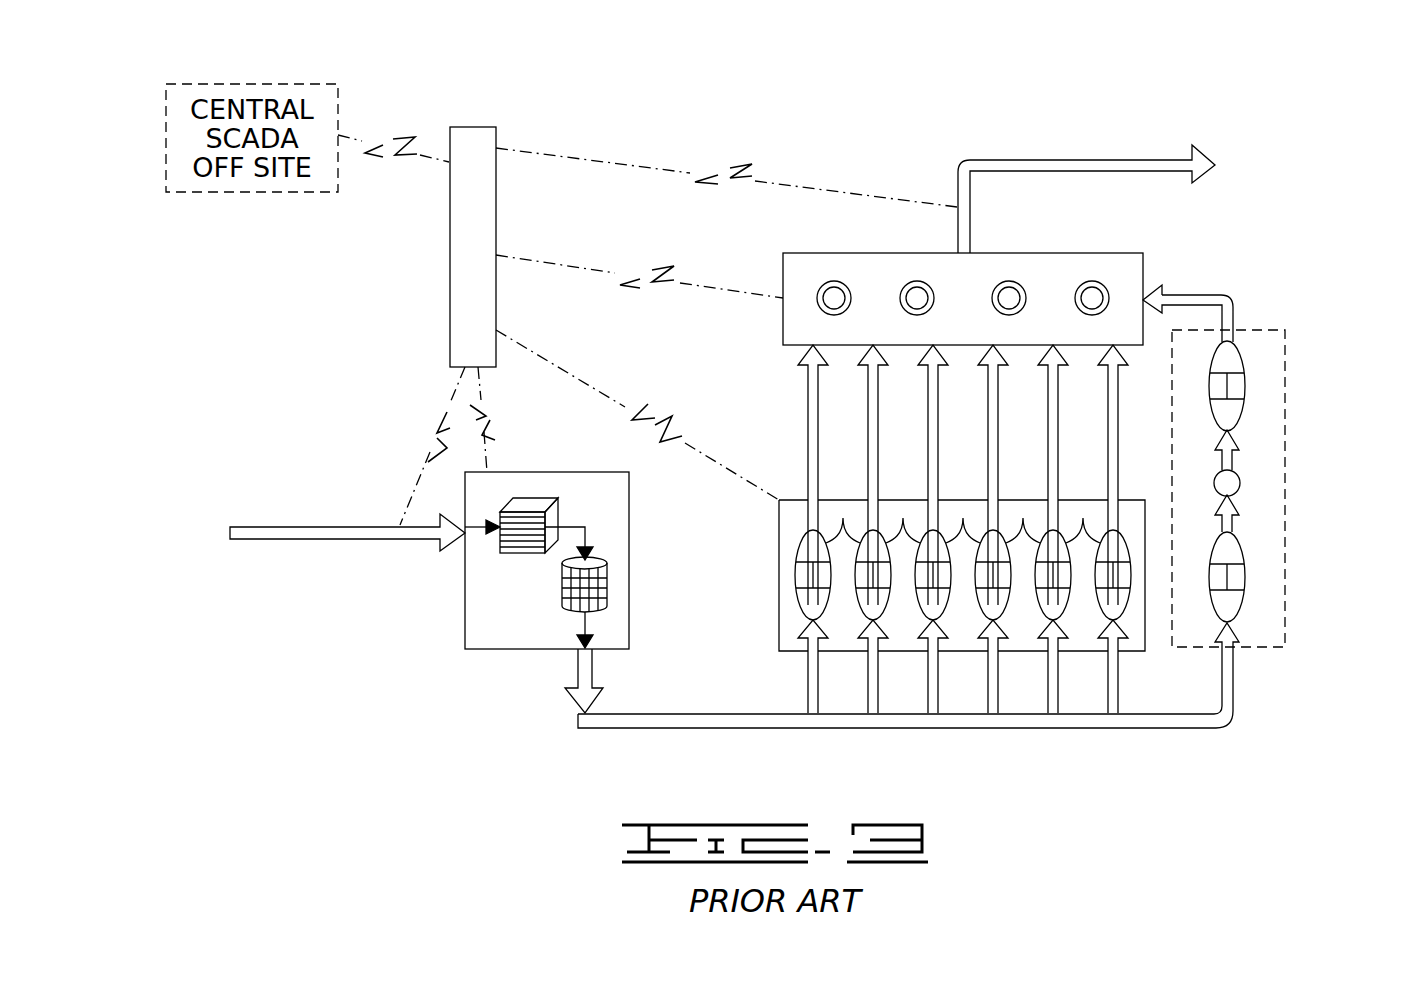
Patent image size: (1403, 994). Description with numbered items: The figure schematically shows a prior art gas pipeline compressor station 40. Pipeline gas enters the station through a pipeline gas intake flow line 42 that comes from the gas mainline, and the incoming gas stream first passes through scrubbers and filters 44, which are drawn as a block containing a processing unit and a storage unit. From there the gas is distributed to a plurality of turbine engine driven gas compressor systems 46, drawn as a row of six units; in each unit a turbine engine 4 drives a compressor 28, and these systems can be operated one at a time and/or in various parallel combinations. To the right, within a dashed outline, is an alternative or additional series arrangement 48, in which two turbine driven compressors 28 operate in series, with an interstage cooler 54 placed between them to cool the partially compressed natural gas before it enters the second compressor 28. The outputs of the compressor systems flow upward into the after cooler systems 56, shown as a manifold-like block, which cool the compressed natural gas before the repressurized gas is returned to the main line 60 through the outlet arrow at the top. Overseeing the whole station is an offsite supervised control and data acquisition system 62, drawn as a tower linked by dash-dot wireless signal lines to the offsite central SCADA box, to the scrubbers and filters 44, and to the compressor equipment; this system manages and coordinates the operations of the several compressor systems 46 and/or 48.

The turbine engine 4 is at (798, 548).
The compressor 28 is at (796, 603).
The gas pipeline compressor station 40 is at (640, 64).
The pipeline gas intake flow line 42 is at (291, 526).
The scrubbers and filters 44 is at (465, 628).
The turbine engine driven gas compressor system 46 is at (843, 518).
The series arrangement 48 is at (1258, 330).
The interstage cooler 54 is at (1240, 484).
The after cooler system 56 is at (1053, 253).
The main line 60 is at (1108, 160).
The offsite supervised control and data acquisition system 62 is at (449, 297).